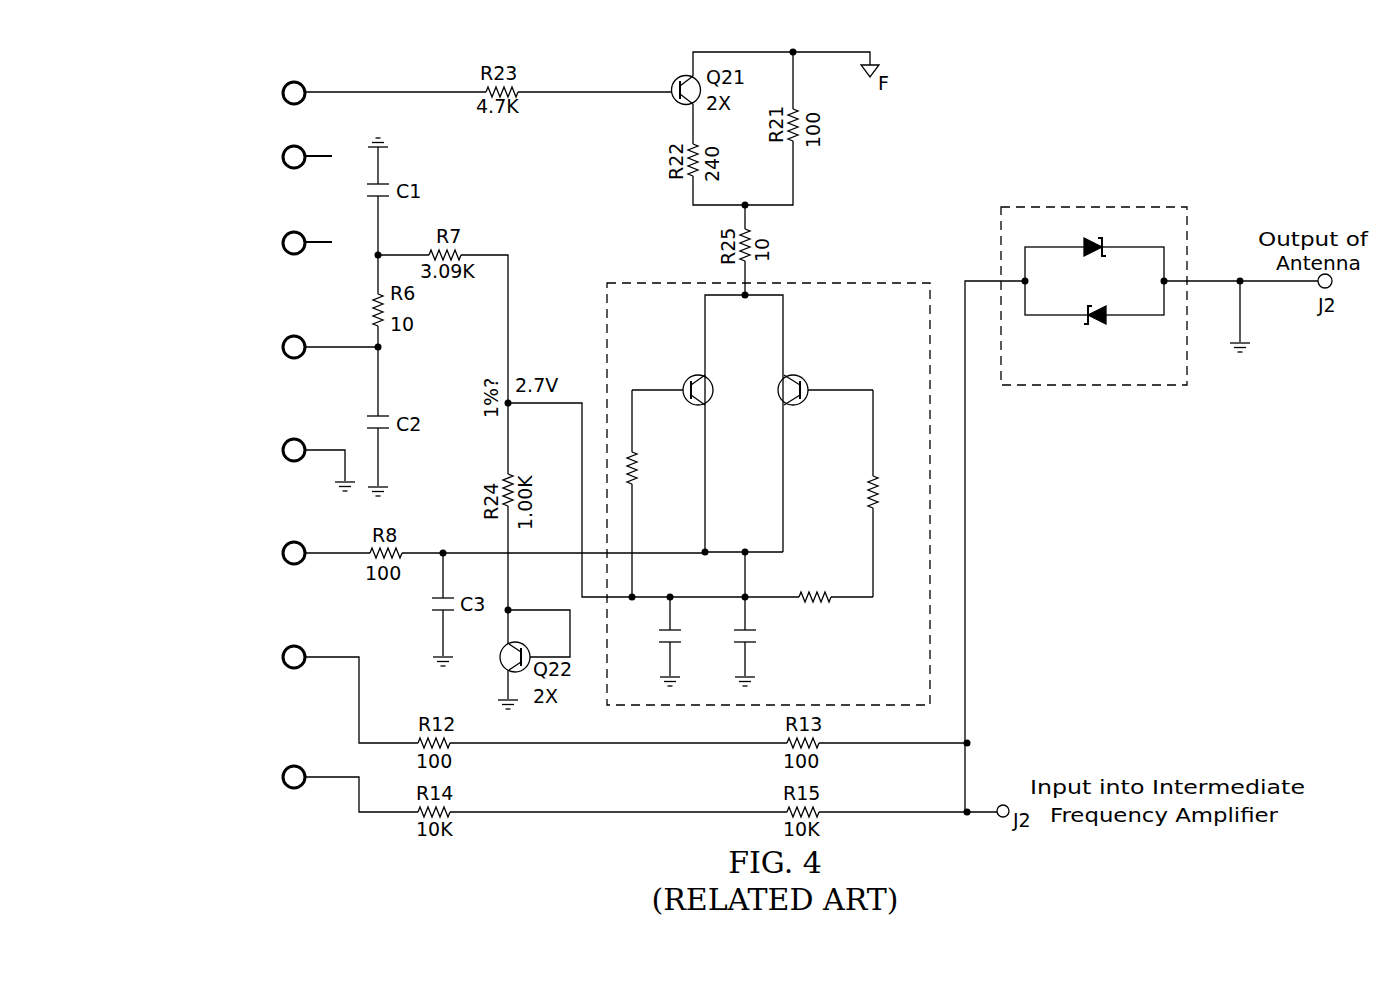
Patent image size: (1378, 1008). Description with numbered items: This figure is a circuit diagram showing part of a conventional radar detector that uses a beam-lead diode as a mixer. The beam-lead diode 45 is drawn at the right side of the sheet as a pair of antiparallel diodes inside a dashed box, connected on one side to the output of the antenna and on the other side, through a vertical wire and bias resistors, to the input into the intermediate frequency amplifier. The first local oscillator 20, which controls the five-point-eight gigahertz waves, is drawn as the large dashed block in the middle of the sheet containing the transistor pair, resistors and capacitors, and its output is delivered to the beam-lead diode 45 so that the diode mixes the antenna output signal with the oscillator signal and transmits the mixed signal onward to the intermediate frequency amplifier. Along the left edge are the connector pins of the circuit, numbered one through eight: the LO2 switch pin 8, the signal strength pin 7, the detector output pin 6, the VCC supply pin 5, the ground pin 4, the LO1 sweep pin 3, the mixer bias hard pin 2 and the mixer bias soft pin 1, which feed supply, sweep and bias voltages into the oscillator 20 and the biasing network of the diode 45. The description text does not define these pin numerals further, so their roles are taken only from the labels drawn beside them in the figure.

The beam-lead diode 45 is at (1090, 207).
The first local oscillator 20 is at (932, 610).
The MXR_BIAS SOFT pin 1 is at (275, 769).
The MXR_BIAS HARD pin 2 is at (275, 649).
The LO1_SWEEP pin 3 is at (280, 545).
The GROUND pin 4 is at (306, 452).
The VCC pin 5 is at (266, 339).
The DETECTOR OUT pin 6 is at (271, 234).
The SGNL_STRNGTH pin 7 is at (271, 148).
The LO2_SWTCH pin 8 is at (260, 82).